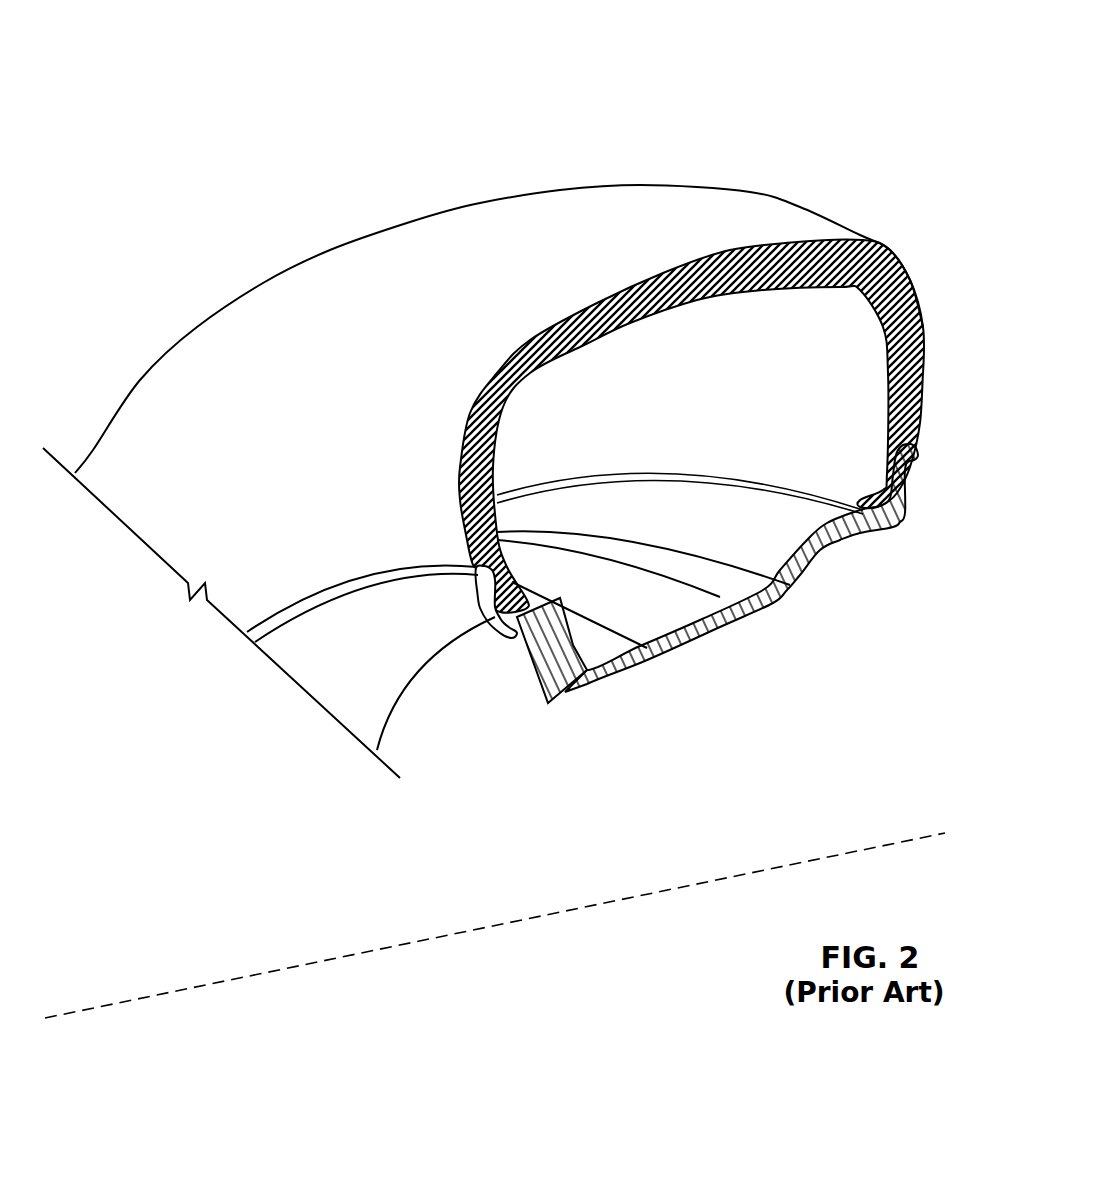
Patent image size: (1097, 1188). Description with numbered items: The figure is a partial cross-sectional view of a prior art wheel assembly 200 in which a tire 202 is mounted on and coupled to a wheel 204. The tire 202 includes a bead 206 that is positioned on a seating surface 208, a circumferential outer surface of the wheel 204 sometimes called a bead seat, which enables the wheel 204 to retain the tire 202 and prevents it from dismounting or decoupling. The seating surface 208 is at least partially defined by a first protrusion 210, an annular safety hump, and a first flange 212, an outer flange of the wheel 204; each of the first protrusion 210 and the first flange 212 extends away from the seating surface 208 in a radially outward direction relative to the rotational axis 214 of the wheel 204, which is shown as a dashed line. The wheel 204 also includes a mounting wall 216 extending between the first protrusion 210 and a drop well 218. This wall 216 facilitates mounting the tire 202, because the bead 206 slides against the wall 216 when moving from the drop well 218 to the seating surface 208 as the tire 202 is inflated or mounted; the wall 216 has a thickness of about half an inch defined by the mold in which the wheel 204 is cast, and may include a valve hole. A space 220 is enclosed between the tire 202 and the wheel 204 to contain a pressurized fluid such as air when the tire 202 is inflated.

The wheel assembly 200 is at (773, 50).
The tire 202 is at (410, 222).
The wheel 204 is at (410, 687).
The bead 206 is at (530, 602).
The seating surface 208 is at (513, 633).
The first protrusion 210 is at (552, 598).
The first flange 212 is at (475, 580).
The rotational axis 214 is at (822, 862).
The mounting wall 216 is at (573, 640).
The drop well 218 is at (723, 597).
The space 220 is at (840, 348).